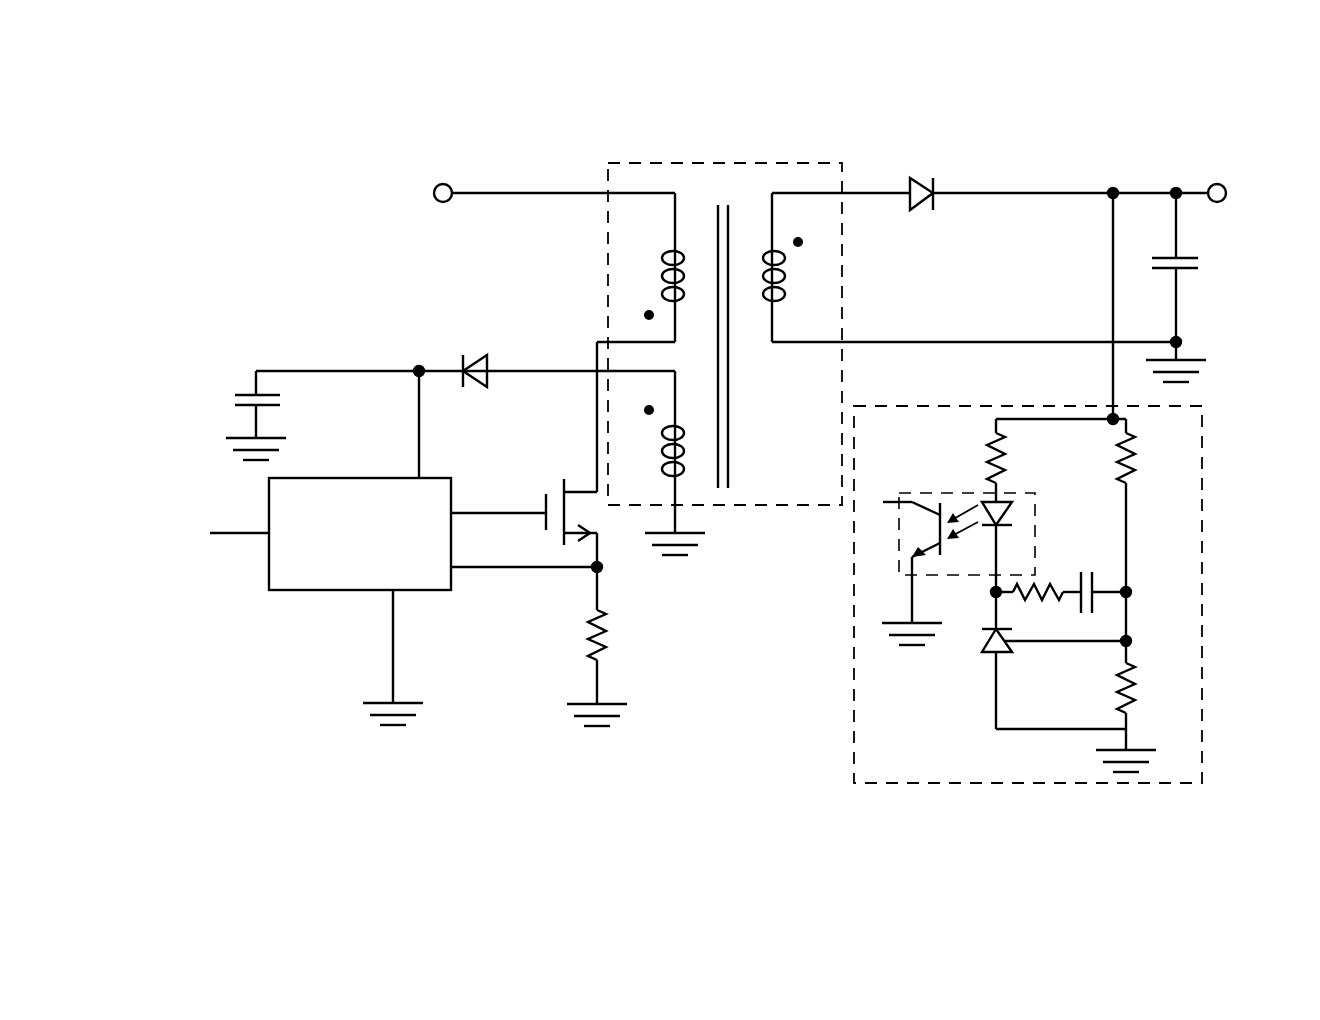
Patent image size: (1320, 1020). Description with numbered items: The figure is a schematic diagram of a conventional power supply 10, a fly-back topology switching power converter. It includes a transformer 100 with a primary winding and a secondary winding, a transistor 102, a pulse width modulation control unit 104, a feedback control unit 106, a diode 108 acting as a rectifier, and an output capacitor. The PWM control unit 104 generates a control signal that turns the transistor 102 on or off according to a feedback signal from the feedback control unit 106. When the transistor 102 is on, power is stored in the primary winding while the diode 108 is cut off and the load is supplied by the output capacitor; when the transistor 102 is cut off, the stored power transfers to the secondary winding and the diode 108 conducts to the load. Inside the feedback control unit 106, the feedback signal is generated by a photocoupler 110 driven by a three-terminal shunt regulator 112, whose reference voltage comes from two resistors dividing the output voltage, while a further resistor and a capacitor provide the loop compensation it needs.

The power supply 10 is at (1138, 122).
The transformer 100 is at (645, 163).
The transistor 102 is at (586, 486).
The pulse width modulation (PWM) control unit 104 is at (297, 478).
The feedback control unit 106 is at (853, 709).
The diode 108 is at (920, 178).
The photocoupler 110 is at (968, 495).
The three-terminal shunt regulator 112 is at (987, 641).